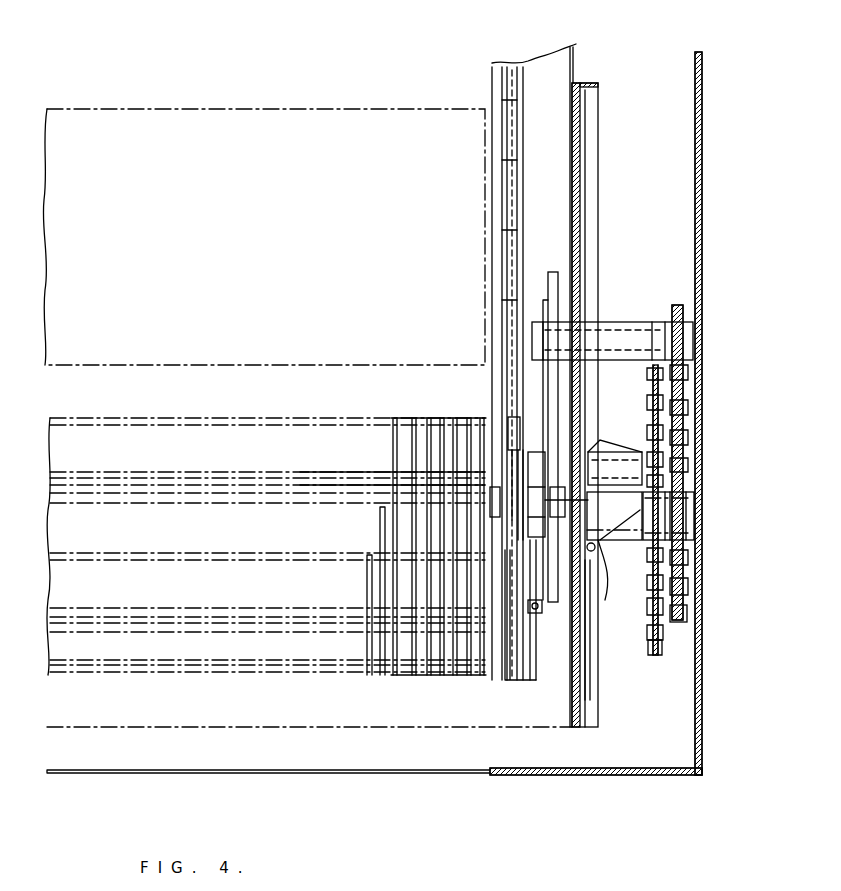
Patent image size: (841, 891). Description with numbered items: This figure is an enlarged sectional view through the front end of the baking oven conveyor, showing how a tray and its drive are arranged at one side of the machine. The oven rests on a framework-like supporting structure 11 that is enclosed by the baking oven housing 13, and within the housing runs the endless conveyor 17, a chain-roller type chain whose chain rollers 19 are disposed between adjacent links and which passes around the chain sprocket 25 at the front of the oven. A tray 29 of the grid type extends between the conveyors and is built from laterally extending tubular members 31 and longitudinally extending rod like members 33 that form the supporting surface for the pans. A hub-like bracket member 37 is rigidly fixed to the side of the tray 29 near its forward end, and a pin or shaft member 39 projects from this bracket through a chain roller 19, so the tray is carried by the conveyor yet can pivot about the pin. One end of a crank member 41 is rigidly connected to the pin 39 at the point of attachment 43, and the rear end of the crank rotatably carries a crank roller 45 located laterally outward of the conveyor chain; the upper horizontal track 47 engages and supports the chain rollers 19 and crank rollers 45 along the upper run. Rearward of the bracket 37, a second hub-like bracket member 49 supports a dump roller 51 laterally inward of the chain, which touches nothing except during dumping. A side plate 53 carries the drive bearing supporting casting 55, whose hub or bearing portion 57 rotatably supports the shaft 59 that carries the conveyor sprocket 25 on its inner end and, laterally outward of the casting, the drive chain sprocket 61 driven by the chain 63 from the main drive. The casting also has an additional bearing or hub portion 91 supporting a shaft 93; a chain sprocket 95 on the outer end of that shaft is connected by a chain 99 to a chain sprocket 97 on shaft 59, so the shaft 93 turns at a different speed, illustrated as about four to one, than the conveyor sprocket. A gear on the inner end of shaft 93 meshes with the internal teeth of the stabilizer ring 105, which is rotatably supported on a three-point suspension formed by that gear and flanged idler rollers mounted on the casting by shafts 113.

The supporting structure 11 is at (601, 168).
The baking oven housing 13 is at (704, 695).
The endless conveyor 17 is at (500, 343).
The chain roller 19 is at (514, 416).
The chain sprocket 25 is at (536, 628).
The tray 29 is at (268, 110).
The tubular member 31 is at (376, 480).
The rod like member 33 is at (395, 530).
The bracket member 37 is at (512, 645).
The pin or shaft member 39 is at (528, 540).
The crank member 41 is at (540, 548).
The point of attachment 43 is at (542, 606).
The crank roller 45 is at (565, 503).
The upper horizontal track 47 is at (578, 57).
The bracket member 49 is at (488, 506).
The dump roller 51 is at (495, 487).
The side plate 53 is at (588, 630).
The drive bearing supporting casting 55 is at (605, 555).
The hub or bearing portion 57 is at (606, 580).
The shaft 59 is at (598, 550).
The drive chain sprocket 61 is at (658, 632).
The chain 63 is at (662, 563).
The bearing or hub portion 91 is at (637, 322).
The shaft 93 is at (654, 330).
The chain sprocket 95 is at (684, 322).
The chain sprocket 97 is at (684, 609).
The chain 99 is at (683, 551).
The stabilizer ring 105 is at (557, 280).
The shaft 113 is at (600, 450).